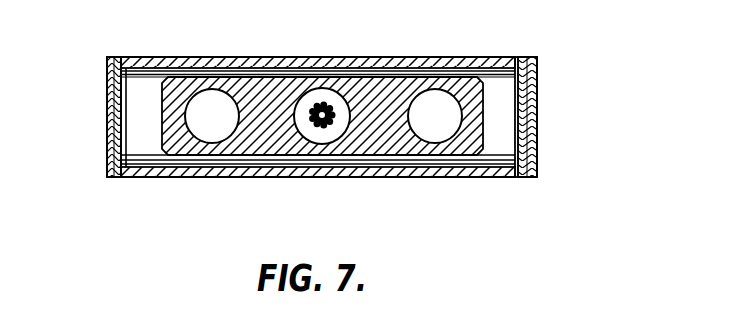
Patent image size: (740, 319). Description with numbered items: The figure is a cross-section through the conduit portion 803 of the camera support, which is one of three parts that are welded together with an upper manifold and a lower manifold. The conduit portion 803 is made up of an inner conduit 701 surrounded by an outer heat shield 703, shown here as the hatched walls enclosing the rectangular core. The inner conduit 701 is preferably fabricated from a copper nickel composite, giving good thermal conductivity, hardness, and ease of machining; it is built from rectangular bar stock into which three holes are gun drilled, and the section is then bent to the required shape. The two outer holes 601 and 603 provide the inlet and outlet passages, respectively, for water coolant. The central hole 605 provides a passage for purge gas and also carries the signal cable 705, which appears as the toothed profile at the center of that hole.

The hole 601 is at (200, 93).
The hole 603 is at (416, 93).
The hole 605 is at (303, 91).
The inner conduit 701 is at (246, 156).
The outer heat shield 703 is at (104, 103).
The signal cable 705 is at (322, 116).
The conduit portion 803 is at (562, 113).